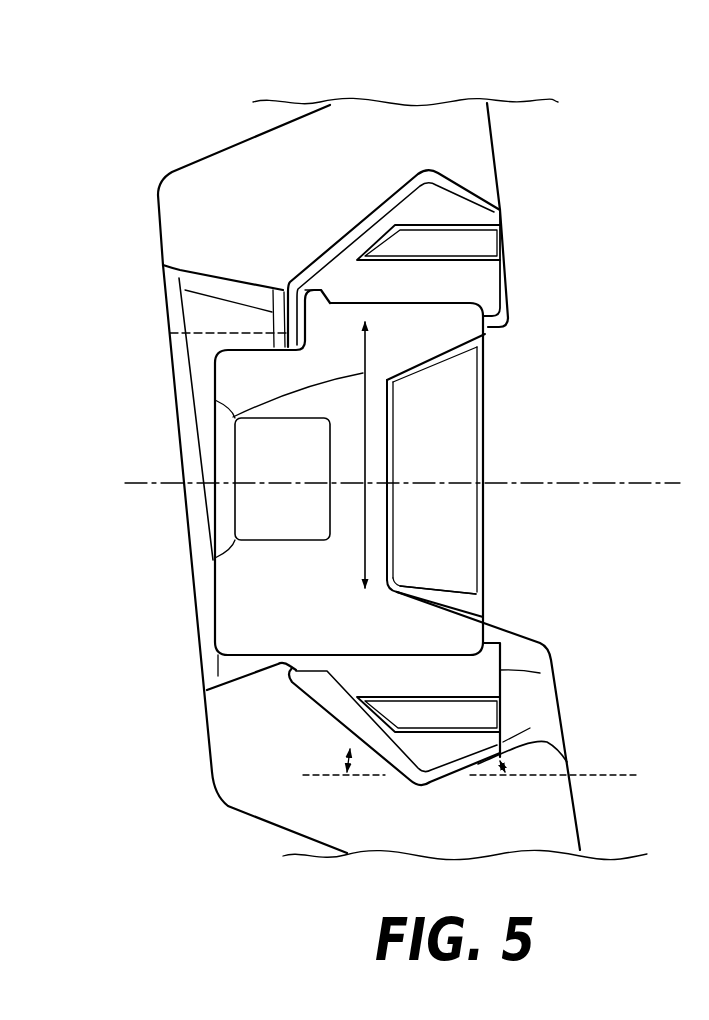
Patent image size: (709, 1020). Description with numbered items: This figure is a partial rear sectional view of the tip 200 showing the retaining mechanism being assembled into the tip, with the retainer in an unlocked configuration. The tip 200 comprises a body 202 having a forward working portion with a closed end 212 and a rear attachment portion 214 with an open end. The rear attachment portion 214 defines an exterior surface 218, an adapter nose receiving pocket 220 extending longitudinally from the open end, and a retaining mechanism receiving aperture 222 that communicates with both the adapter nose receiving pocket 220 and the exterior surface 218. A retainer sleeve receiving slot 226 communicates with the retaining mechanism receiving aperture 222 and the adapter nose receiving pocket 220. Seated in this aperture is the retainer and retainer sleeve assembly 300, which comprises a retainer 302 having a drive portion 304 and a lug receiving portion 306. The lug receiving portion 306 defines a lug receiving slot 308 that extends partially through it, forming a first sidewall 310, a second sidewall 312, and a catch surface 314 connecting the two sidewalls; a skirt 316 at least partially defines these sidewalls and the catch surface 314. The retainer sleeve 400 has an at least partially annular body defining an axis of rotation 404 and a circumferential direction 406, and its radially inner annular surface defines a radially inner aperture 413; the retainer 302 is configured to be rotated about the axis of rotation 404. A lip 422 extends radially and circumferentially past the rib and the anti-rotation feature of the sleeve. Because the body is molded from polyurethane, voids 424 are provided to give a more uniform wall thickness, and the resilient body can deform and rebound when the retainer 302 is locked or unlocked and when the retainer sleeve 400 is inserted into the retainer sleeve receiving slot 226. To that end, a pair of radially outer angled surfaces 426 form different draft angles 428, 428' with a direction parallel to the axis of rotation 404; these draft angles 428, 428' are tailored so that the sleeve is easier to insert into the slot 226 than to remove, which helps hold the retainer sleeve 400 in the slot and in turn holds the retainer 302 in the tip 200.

The tip 200 is at (219, 118).
The body 202 is at (190, 160).
The closed end 212 is at (172, 298).
The rear attachment portion 214 is at (210, 764).
The exterior surface 218 is at (205, 715).
The adapter nose receiving pocket 220 is at (507, 348).
The retaining mechanism receiving aperture 222 is at (205, 382).
The retainer sleeve receiving slot 226 is at (494, 198).
The retainer and retainer sleeve assembly 300 is at (487, 470).
The retainer 302 is at (483, 595).
The drive portion 304 is at (237, 595).
The lug receiving portion 306 is at (458, 450).
The lug receiving slot 308 is at (442, 570).
The first sidewall 310 is at (407, 590).
The second sidewall 312 is at (415, 369).
The catch surface 314 is at (462, 515).
The skirt 316 is at (407, 645).
The retainer sleeve 400 is at (367, 232).
The axis of rotation 404 is at (660, 487).
The circumferential direction 406 is at (233, 417).
The radially inner aperture 413 is at (400, 297).
The lip 422 is at (492, 312).
The voids 424 is at (486, 246).
The radially outer angled surface 426 is at (482, 768).
The draft angle 428 is at (365, 818).
The draft angle 428' is at (556, 753).